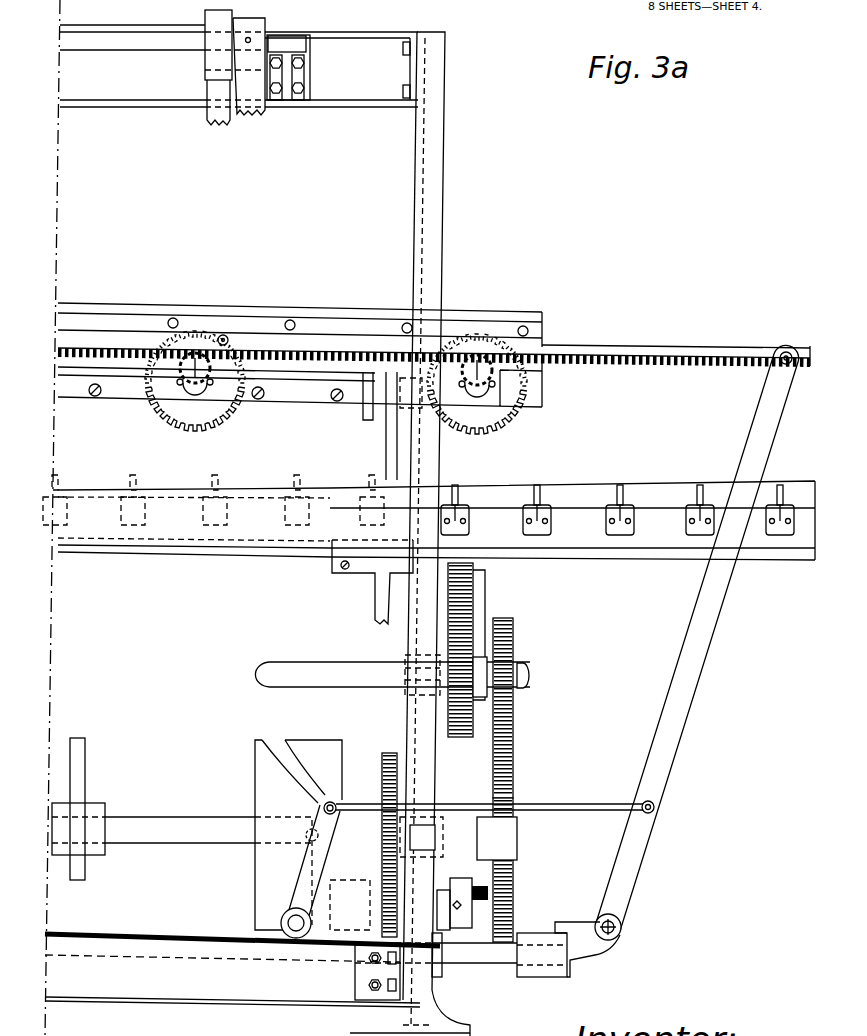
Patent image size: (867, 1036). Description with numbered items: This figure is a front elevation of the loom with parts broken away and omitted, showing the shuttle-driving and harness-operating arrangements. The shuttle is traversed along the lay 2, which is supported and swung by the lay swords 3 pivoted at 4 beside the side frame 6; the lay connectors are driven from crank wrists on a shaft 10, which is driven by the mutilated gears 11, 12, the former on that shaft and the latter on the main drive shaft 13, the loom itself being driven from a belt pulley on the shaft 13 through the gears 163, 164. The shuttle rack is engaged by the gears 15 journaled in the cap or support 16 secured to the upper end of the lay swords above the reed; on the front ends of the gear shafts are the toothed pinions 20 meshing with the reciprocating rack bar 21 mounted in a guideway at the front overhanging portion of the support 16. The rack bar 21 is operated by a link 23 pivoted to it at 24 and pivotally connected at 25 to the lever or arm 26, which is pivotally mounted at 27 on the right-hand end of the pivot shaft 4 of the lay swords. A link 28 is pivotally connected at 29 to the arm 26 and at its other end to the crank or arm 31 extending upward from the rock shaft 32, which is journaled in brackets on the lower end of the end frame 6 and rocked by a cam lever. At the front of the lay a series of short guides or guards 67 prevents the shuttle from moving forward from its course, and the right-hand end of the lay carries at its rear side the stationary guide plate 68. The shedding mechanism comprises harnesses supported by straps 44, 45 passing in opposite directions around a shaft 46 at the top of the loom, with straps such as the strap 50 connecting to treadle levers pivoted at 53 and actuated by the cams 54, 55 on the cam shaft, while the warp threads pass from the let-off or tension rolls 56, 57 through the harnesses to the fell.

The lay 2 is at (194, 522).
The lay swords 3 is at (380, 594).
The pivot of lay swords 4 is at (473, 957).
The side frame 6 is at (432, 176).
The shaft 10 is at (495, 675).
The mutilated gear 11 is at (468, 723).
The mutilated gear 12 is at (477, 580).
The main drive shaft 13 is at (530, 677).
The gears 15 is at (213, 412).
The cap or support 16 is at (319, 312).
The toothed pinions 20 is at (183, 380).
The reciprocating rack bar 21 is at (678, 348).
The link 23 is at (574, 347).
The pivot 24 is at (226, 335).
The pivotal connection 25 is at (787, 352).
The lever or arm 26 is at (690, 670).
The pivot of arm 27 is at (622, 928).
The link 28 is at (577, 805).
The pivotal connection 29 is at (655, 806).
The crank or arm 31 is at (300, 873).
The rock shaft 32 is at (290, 924).
The strap 44 is at (248, 118).
The strap 45 is at (210, 118).
The shaft 46 is at (105, 45).
The strap 50 is at (335, 803).
The pivot of treadle levers 53 is at (392, 890).
The cam 54 is at (308, 845).
The cam 55 is at (75, 740).
The let-off or tension roll 56 is at (317, 745).
The let-off or tension roll 57 is at (158, 825).
The guides or guards 67 is at (217, 478).
The stationary guide plate 68 is at (665, 482).
The gear 163 is at (512, 620).
The gear 164 is at (512, 884).